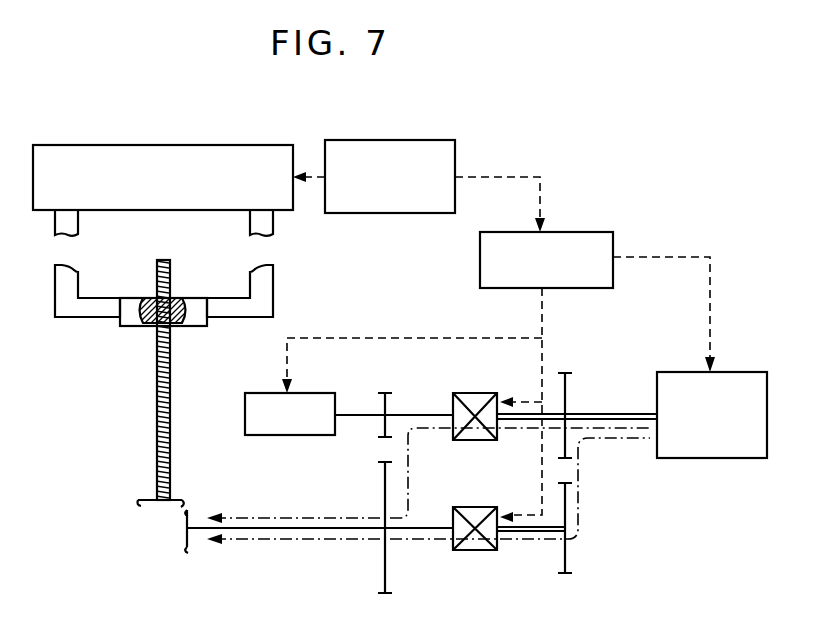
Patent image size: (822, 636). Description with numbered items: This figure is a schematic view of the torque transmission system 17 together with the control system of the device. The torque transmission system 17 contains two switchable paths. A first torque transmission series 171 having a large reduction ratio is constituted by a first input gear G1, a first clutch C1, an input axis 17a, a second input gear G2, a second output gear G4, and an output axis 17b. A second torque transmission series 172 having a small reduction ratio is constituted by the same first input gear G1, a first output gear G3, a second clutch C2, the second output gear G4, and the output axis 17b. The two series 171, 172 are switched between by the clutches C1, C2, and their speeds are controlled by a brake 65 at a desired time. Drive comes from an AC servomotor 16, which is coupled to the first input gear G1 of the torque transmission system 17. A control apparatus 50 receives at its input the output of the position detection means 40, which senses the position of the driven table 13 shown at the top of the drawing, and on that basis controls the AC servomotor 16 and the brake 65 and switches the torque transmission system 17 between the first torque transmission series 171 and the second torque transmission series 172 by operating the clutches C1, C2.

The table 13 is at (268, 145).
The position detection means 40 is at (443, 140).
The control apparatus 50 is at (573, 232).
The AC servomotor 16 is at (735, 372).
The brake 65 is at (263, 393).
The torque transmission system 17 is at (592, 528).
The input axis 17a is at (358, 413).
The output axis 17b is at (287, 527).
The first torque transmission series 171 is at (242, 517).
The second torque transmission series 172 is at (353, 545).
The first input gear G1 is at (567, 402).
The second input gear G2 is at (388, 397).
The first output gear G3 is at (567, 507).
The second output gear G4 is at (384, 477).
The first clutch C1 is at (468, 393).
The second clutch C2 is at (477, 505).